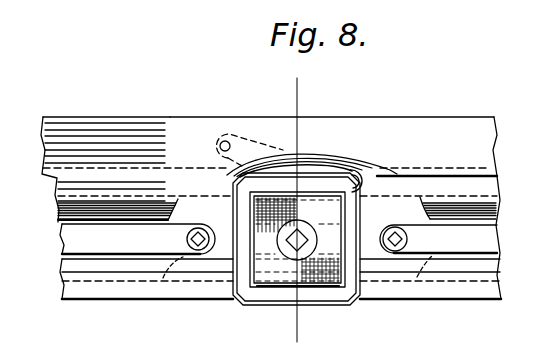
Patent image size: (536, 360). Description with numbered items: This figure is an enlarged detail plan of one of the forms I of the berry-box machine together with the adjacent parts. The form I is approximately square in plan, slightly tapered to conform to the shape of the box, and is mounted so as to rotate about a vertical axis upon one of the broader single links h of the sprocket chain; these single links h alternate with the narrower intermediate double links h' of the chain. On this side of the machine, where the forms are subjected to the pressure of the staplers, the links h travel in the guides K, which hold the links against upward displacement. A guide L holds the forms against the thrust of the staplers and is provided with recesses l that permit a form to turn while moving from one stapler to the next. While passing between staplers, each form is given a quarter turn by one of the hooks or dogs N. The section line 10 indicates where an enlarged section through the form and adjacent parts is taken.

The guides K is at (98, 187).
The guide L is at (228, 77).
The recesses l is at (281, 150).
The hook or dog N is at (321, 157).
The single link h is at (141, 285).
The intermediate double link h' is at (438, 285).
The form I is at (275, 275).
The section line 10 is at (312, 77).